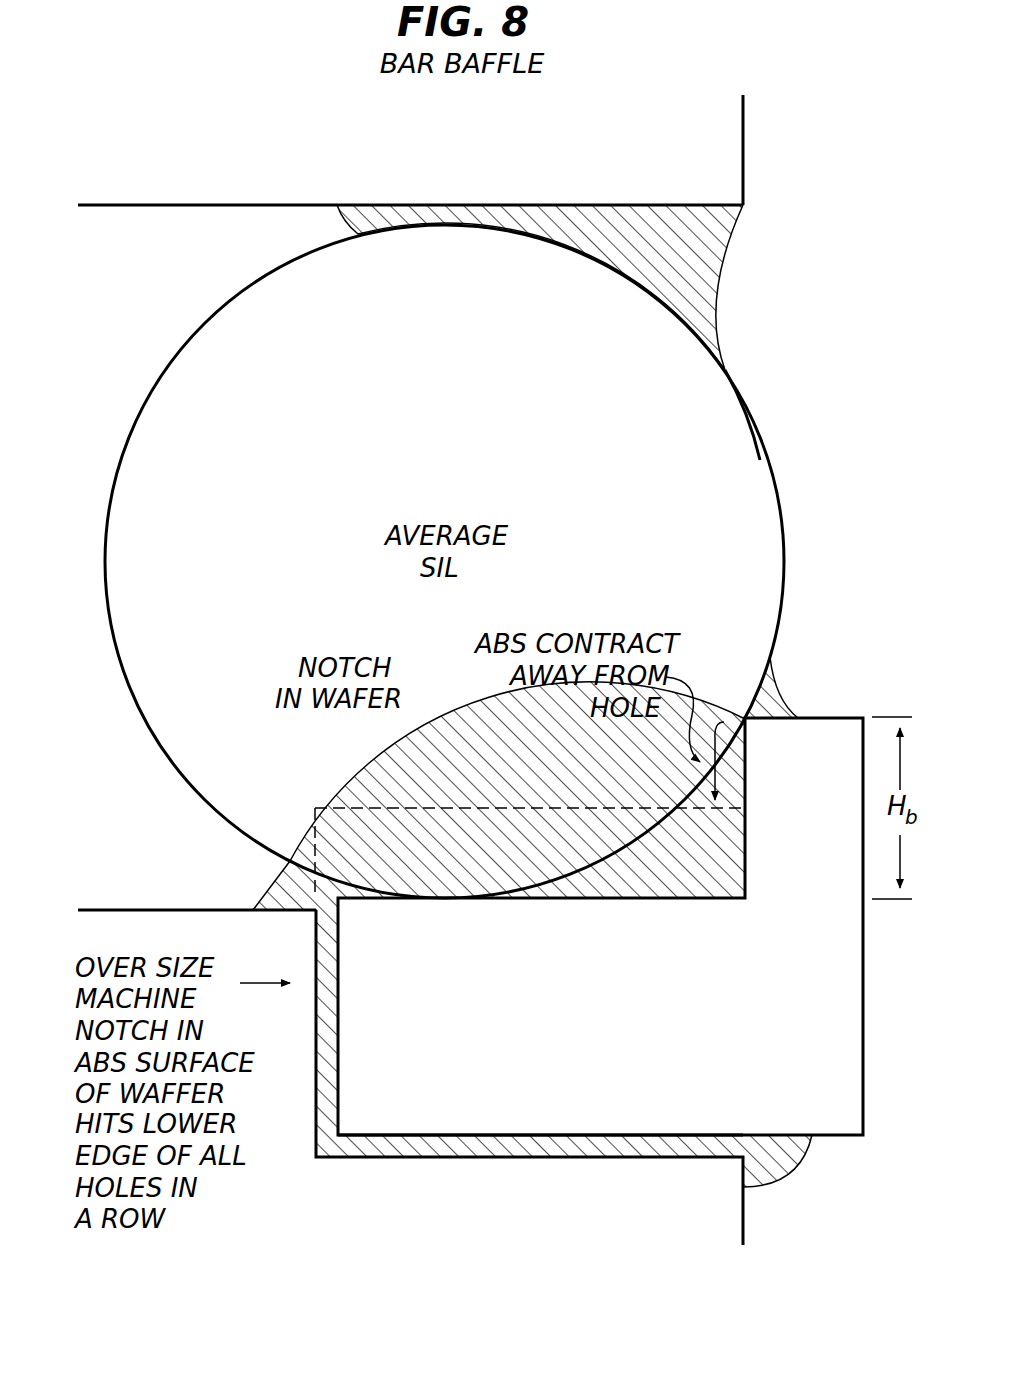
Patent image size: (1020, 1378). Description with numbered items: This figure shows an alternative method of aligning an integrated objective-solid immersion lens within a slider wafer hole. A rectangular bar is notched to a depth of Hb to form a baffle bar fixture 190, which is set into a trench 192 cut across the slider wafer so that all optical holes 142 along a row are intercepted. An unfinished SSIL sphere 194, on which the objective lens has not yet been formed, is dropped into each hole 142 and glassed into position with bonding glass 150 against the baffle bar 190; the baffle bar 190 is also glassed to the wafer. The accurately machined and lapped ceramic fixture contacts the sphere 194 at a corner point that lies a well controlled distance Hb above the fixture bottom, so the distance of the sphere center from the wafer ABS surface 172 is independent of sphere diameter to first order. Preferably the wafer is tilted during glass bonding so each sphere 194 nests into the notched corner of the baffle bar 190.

The cavity 142 is at (143, 338).
The bonding glass 150 is at (705, 278).
The wafer ABS surface 172 is at (743, 158).
The baffle bar fixture 190 is at (822, 1128).
The trench 192 is at (372, 808).
The unfinished SSIL sphere 194 is at (724, 413).